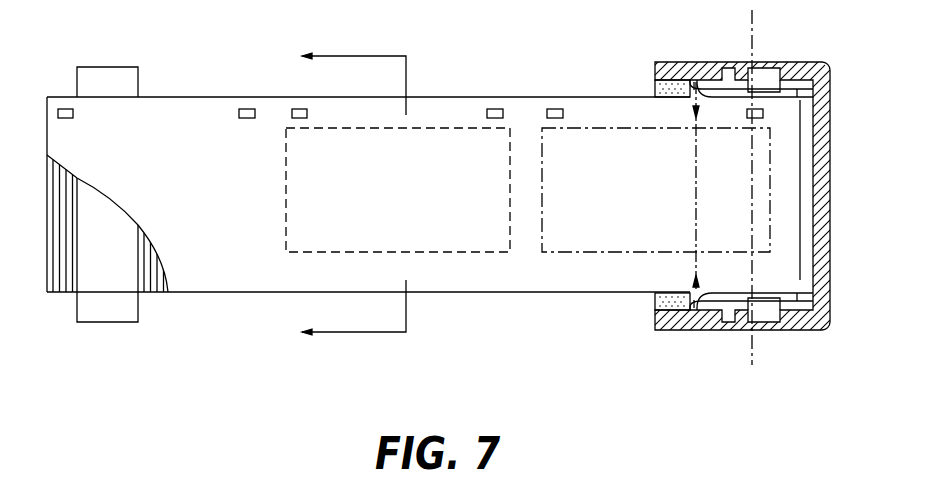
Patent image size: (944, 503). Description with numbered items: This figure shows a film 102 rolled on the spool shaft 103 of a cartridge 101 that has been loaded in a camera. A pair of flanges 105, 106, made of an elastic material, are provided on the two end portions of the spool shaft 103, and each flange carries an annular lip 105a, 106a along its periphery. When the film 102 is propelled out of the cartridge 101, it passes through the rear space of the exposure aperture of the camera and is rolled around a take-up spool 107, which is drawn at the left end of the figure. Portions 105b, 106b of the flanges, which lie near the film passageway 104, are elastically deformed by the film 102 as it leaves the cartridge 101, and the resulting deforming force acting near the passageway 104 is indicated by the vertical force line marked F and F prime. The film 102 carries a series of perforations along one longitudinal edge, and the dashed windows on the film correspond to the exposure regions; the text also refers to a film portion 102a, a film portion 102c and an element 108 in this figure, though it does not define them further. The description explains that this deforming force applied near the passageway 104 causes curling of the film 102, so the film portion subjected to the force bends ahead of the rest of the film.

The cartridge 101 is at (813, 61).
The film 102 is at (478, 96).
The projection 102a is at (249, 97).
The window 102c is at (580, 253).
The spool shaft 103 is at (763, 66).
The film passageway 104 is at (655, 90).
The flange 105 is at (818, 84).
The annular lip 105a is at (823, 108).
The portion of the flange 105b is at (700, 82).
The flange 106 is at (823, 329).
The annular lip 106a is at (813, 290).
The portion of the flange 106b is at (693, 331).
The take-up spool 107 is at (127, 97).
The opening 108 is at (330, 254).